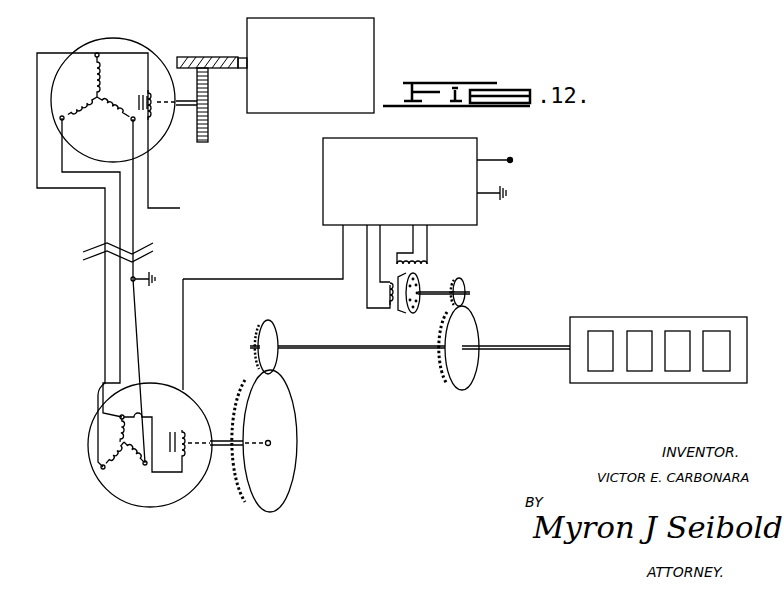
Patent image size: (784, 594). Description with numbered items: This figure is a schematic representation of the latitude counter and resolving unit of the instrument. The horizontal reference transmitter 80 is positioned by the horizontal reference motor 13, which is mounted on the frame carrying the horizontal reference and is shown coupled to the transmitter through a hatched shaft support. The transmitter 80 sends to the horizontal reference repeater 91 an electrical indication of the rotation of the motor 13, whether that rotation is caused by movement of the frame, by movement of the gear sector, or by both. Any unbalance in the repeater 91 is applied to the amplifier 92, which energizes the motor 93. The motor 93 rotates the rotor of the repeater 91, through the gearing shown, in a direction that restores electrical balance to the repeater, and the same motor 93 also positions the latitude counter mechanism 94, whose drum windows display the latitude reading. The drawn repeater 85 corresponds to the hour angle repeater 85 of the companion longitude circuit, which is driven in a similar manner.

The horizontal reference transmitter 80 is at (127, 43).
The horizontal reference motor 13 is at (324, 60).
The hour angle repeater 85 is at (208, 128).
The amplifier 92 is at (422, 183).
The motor 93 is at (420, 283).
The latitude counter mechanism 94 is at (575, 368).
The horizontal reference repeater 91 is at (177, 492).